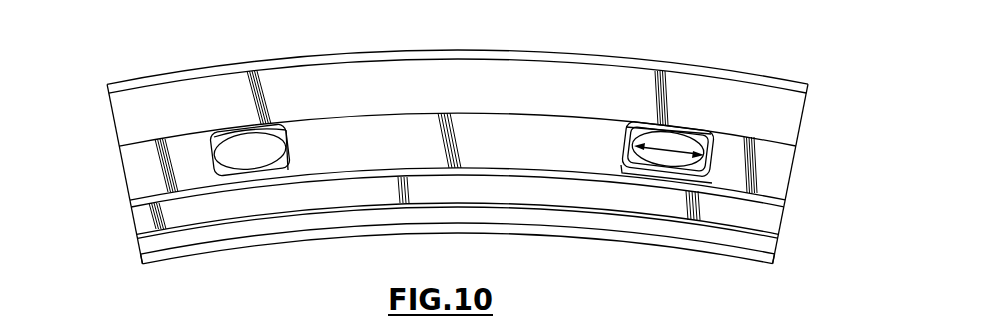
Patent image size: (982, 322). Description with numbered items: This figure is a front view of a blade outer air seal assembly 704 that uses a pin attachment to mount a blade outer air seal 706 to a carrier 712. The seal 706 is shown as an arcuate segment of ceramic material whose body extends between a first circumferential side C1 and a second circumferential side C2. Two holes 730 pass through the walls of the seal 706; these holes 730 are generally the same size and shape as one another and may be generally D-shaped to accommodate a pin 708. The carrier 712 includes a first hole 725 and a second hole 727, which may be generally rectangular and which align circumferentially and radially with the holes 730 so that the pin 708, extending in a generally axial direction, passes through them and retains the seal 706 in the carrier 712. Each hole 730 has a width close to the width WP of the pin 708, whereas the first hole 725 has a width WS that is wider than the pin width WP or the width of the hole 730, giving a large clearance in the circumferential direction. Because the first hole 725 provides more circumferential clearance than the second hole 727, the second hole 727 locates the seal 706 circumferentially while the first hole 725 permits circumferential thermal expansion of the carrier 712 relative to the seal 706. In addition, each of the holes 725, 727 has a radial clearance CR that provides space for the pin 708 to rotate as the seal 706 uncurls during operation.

The blade outer air seal assembly 704 is at (440, 158).
The blade outer air seal 706 is at (212, 236).
The pin 708 is at (228, 155).
The carrier 712 is at (722, 98).
The first hole 725 is at (621, 124).
The second hole 727 is at (222, 130).
The hole 730 is at (283, 130).
The first circumferential side C1 is at (140, 247).
The second circumferential side C2 is at (779, 247).
The radial clearance CR is at (293, 128).
The pin width WP is at (712, 142).
The first hole width WS is at (668, 178).